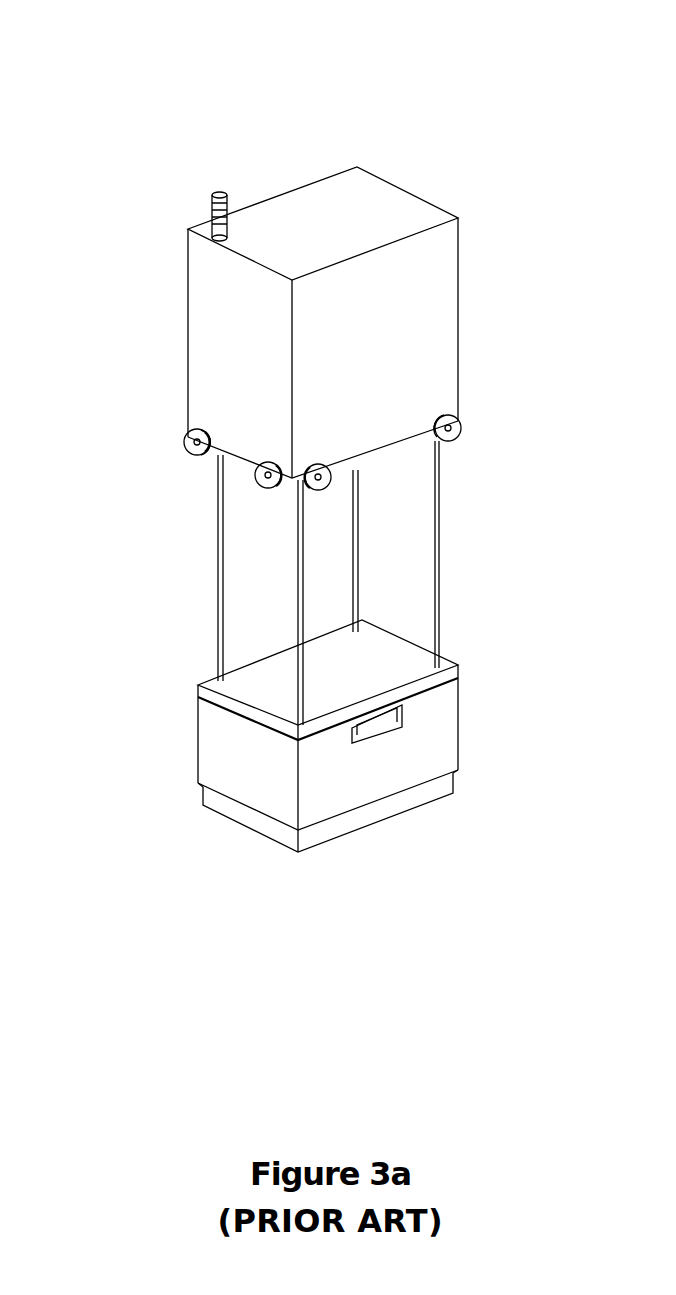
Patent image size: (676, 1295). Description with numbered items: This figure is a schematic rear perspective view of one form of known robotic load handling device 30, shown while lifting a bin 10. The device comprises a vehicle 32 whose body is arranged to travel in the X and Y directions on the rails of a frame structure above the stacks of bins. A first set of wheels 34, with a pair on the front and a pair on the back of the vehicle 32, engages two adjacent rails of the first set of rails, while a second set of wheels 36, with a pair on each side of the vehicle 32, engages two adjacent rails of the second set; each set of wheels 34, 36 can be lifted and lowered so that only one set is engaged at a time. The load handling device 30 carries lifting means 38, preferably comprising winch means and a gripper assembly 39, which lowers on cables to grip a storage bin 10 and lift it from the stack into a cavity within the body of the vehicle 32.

The load handling device 30 is at (153, 111).
The vehicle 32 is at (395, 307).
The first set of wheels 34 is at (455, 430).
The second set of wheels 36 is at (192, 432).
The lifting means 38 is at (435, 555).
The gripper assembly 39 is at (397, 668).
The bin 10 is at (425, 755).